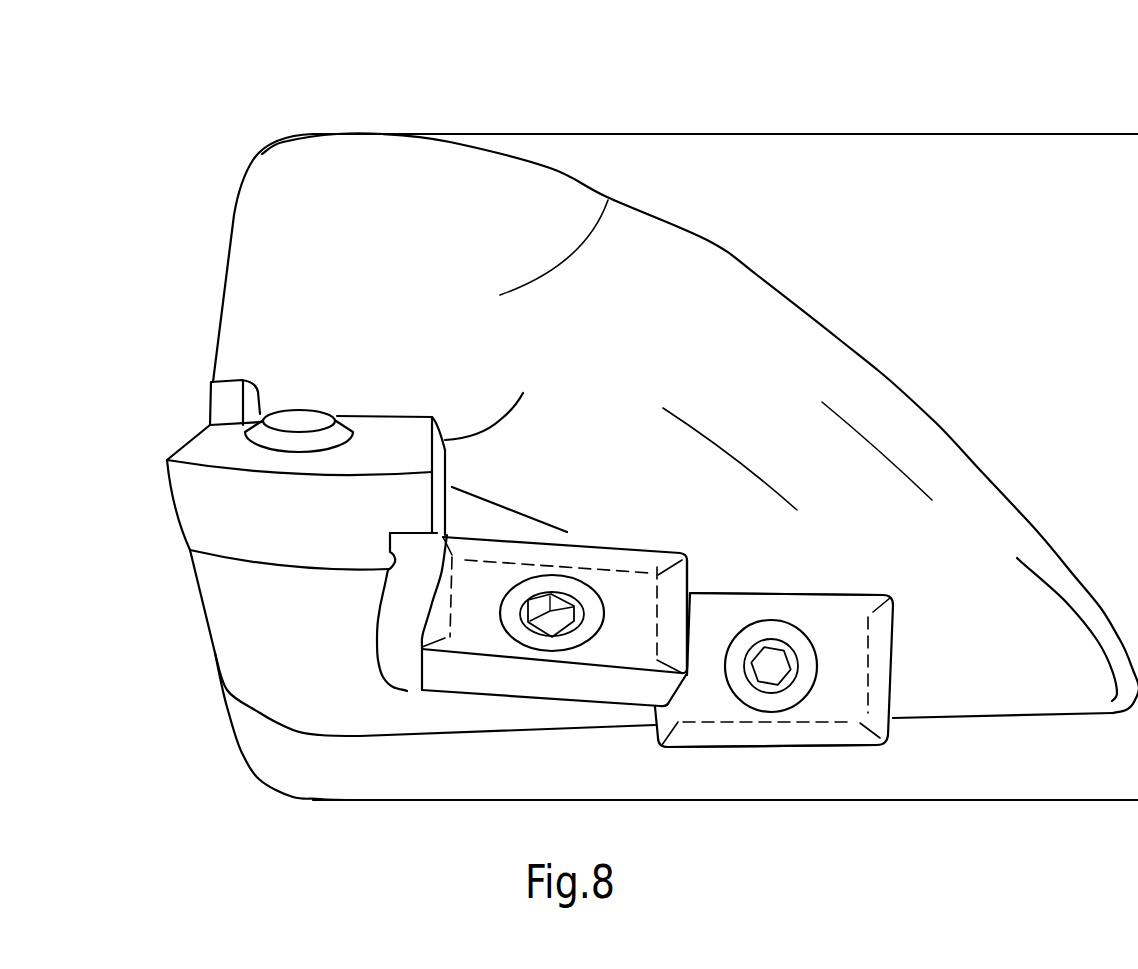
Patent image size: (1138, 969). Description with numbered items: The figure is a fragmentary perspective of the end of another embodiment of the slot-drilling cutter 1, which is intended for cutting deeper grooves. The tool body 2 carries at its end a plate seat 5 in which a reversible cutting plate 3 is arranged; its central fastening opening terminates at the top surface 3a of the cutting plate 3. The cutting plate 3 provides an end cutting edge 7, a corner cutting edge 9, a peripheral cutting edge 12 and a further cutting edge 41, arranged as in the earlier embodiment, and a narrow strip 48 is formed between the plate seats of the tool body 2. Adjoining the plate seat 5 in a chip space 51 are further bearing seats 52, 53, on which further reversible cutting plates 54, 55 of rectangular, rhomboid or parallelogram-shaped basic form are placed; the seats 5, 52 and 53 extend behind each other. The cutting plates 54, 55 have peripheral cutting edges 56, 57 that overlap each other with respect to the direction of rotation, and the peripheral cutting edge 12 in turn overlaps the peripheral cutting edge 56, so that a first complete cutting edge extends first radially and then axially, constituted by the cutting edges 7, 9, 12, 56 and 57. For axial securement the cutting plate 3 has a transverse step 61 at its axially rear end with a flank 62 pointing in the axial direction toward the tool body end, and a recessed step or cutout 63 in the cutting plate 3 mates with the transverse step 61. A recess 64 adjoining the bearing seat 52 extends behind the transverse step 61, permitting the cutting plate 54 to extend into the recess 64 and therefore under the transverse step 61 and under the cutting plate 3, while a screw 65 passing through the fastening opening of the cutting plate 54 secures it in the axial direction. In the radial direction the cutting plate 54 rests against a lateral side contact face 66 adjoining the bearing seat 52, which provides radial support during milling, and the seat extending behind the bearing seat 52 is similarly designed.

The slot-drilling cutter 1 is at (1067, 117).
The tool body 2 is at (742, 157).
The cutting plate 3 is at (223, 512).
The top surface of the cutting plate 3a is at (384, 452).
The plate seat 5 is at (270, 572).
The end cutting edge 7 is at (183, 447).
The corner cutting edge 9 is at (177, 459).
The peripheral cutting edge 12 is at (273, 470).
The cutting edge 41 is at (210, 423).
The narrow strip 48 is at (295, 398).
The chip space 51 is at (713, 332).
The bearing seat 52 is at (528, 703).
The bearing seat 53 is at (765, 763).
The cutting plate 54 is at (623, 595).
The cutting plate 55 is at (824, 616).
The peripheral cutting edge 56 is at (602, 661).
The peripheral cutting edge 57 is at (831, 668).
The transverse step 61 is at (410, 541).
The flank 62 is at (390, 557).
The recessed step or cutout 63 is at (383, 525).
The recess 64 is at (402, 652).
The clamping screw 65 is at (583, 600).
The lateral side contact face 66 is at (535, 543).